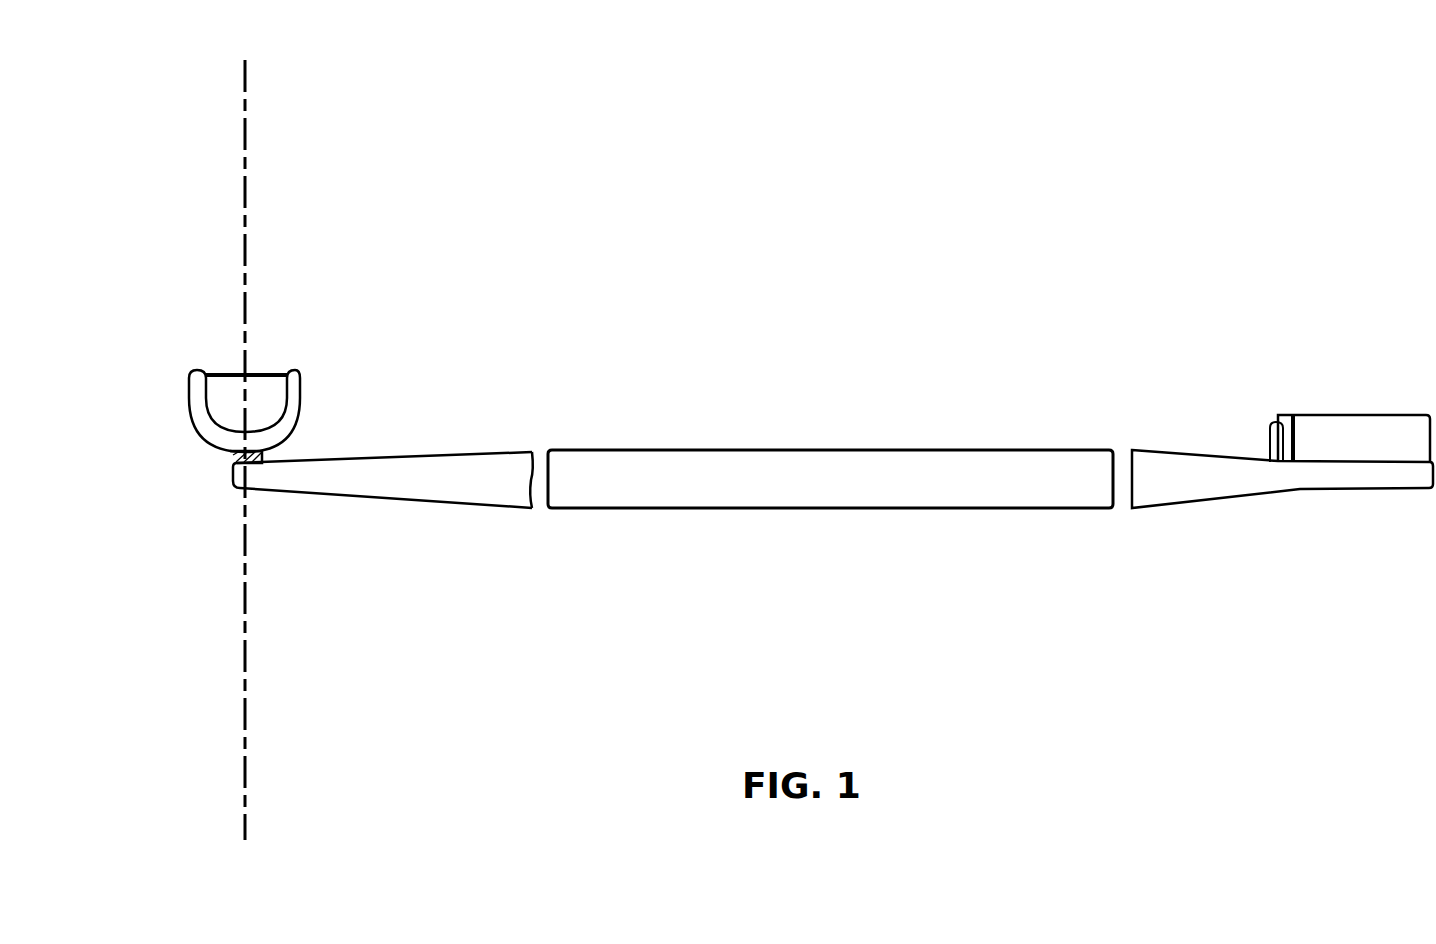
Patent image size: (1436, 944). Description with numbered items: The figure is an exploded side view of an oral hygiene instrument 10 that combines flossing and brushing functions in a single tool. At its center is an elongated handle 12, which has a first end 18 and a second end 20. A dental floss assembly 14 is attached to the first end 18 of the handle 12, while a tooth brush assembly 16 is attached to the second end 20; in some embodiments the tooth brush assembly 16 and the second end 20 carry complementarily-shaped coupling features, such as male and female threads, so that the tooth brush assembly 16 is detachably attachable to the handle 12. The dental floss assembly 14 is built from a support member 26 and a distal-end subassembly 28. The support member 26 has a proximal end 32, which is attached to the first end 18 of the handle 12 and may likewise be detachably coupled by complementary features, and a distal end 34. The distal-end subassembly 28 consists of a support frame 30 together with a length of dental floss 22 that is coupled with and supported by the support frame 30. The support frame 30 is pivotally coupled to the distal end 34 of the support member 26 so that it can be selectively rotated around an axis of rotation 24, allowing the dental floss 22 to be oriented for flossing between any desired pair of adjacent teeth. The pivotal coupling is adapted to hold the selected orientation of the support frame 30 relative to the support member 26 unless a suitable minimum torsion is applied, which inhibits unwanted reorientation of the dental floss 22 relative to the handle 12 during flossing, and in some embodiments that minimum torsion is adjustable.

The oral hygiene instrument 10 is at (1192, 123).
The elongated handle 12 is at (855, 450).
The dental floss assembly 14 is at (482, 292).
The tooth brush assembly 16 is at (1238, 312).
The first end 18 is at (567, 432).
The second end 20 is at (1102, 427).
The length of dental floss 22 is at (227, 377).
The axis of rotation 24 is at (245, 753).
The support member 26 is at (385, 488).
The distal-end subassembly 28 is at (333, 315).
The support frame 30 is at (200, 422).
The proximal end 32 is at (515, 518).
The distal end 34 is at (210, 488).